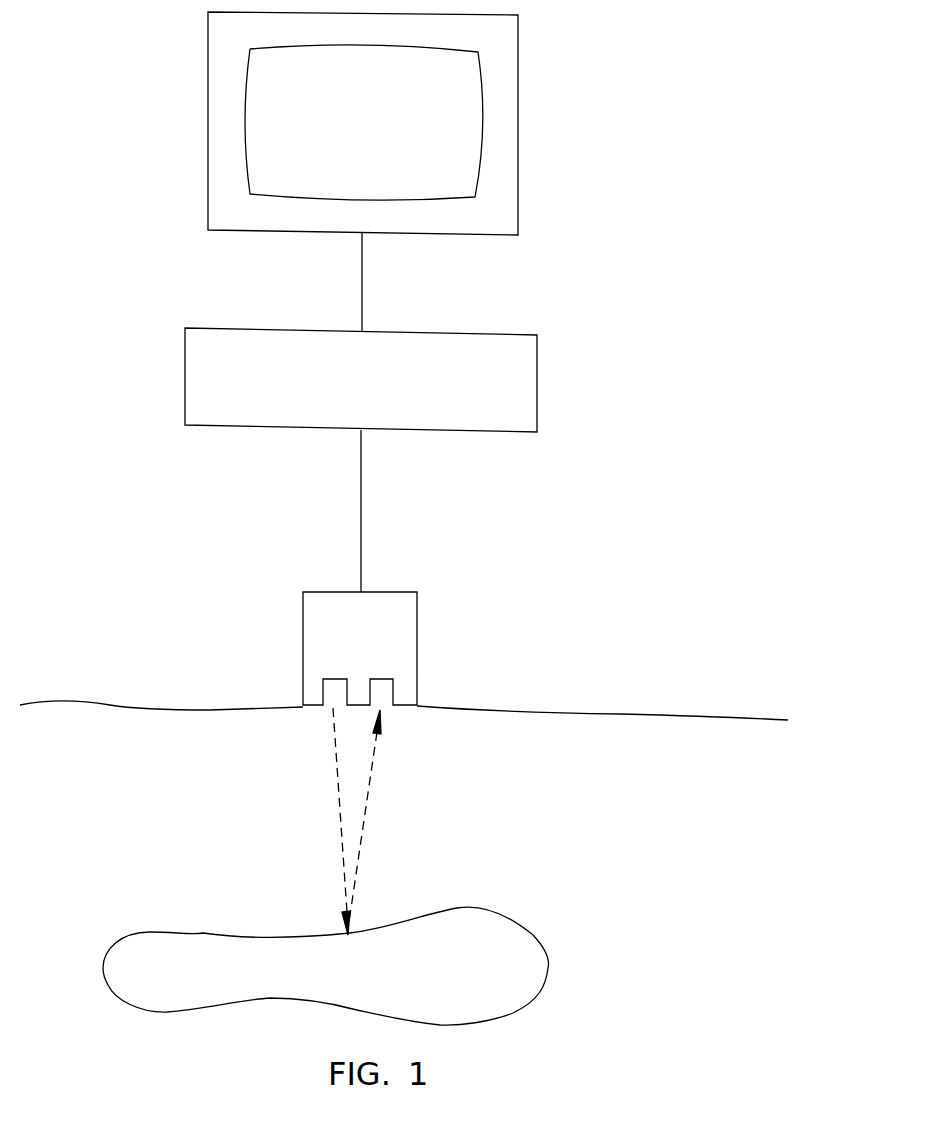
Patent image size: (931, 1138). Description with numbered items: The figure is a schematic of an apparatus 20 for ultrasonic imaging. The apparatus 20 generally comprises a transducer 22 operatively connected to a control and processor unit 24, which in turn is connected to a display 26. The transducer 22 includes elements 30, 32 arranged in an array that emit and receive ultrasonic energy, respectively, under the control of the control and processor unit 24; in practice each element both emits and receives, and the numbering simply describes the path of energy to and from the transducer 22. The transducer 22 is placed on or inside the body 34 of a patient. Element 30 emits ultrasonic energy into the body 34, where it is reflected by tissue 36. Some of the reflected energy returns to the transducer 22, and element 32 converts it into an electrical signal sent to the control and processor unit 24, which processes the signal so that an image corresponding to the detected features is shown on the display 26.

The apparatus 20 is at (667, 377).
The transducer 22 is at (417, 609).
The control and processor unit 24 is at (185, 387).
The display 26 is at (208, 122).
The element 30 is at (328, 704).
The element 32 is at (384, 706).
The body 34 is at (678, 715).
The tissue 36 is at (543, 983).